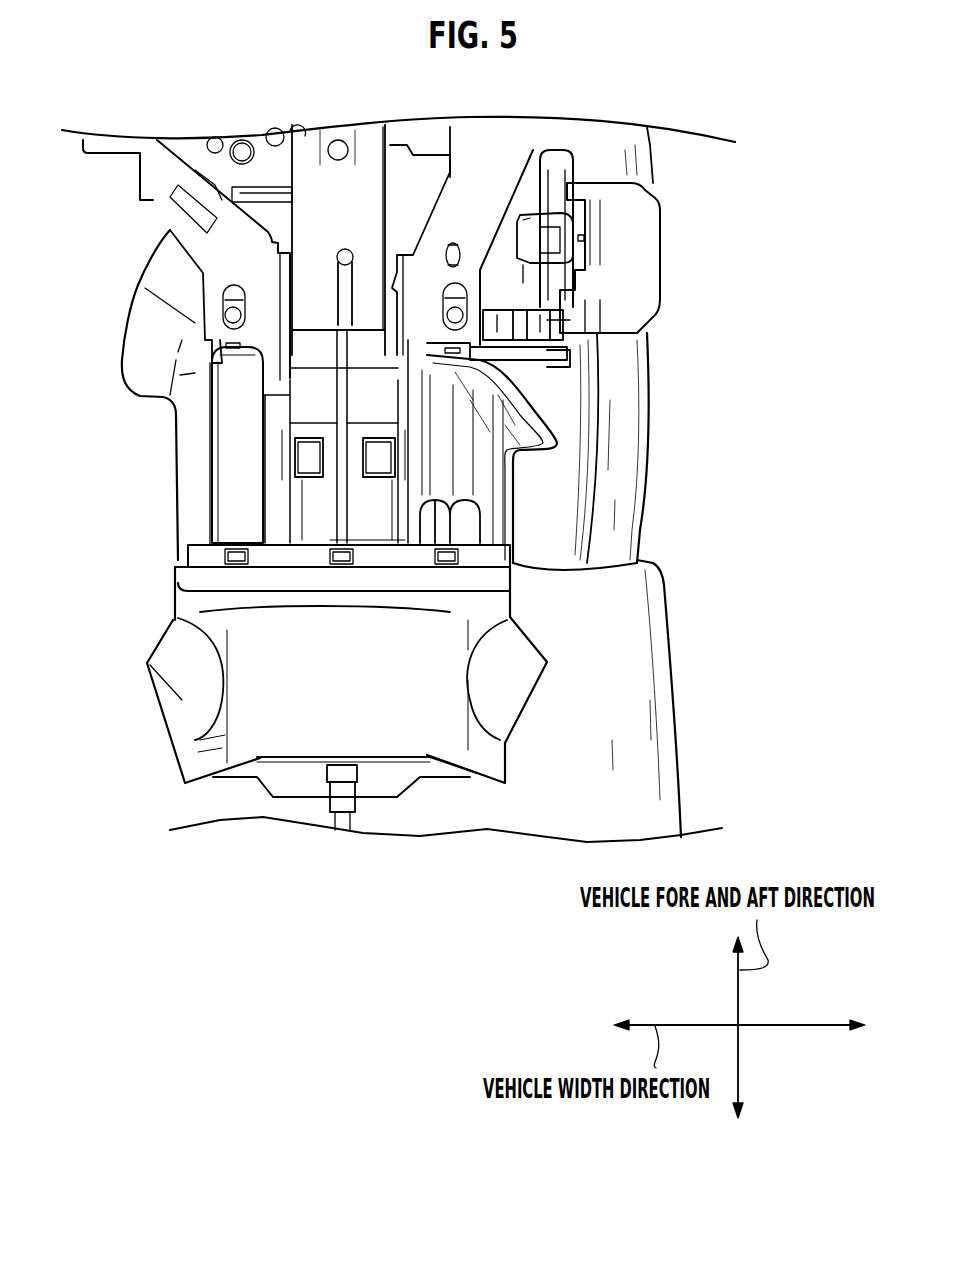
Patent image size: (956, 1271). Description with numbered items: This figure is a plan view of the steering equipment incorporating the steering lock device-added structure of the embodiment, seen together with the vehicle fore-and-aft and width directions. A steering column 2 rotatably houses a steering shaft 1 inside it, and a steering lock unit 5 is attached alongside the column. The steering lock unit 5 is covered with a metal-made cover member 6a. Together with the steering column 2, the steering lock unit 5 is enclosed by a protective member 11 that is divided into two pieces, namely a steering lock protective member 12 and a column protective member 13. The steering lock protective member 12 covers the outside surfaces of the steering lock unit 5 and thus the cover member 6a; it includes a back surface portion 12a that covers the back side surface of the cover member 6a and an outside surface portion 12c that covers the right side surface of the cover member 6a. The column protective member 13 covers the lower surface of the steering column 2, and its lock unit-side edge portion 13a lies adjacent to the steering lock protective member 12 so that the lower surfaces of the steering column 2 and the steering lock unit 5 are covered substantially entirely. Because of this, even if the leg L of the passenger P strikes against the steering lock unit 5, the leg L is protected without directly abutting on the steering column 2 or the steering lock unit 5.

The steering shaft 1 is at (340, 803).
The steering column 2 is at (162, 580).
The steering lock unit 5 is at (619, 210).
The cover member 6a is at (605, 238).
The protective member 11 is at (785, 283).
The steering lock protective member 12 is at (660, 277).
The back surface portion 12a is at (605, 355).
The outside surface portion 12c is at (616, 255).
The column protective member 13 is at (530, 370).
The lock unit-side edge portion 13a is at (585, 300).
The leg L is at (605, 613).
The passenger P is at (683, 803).